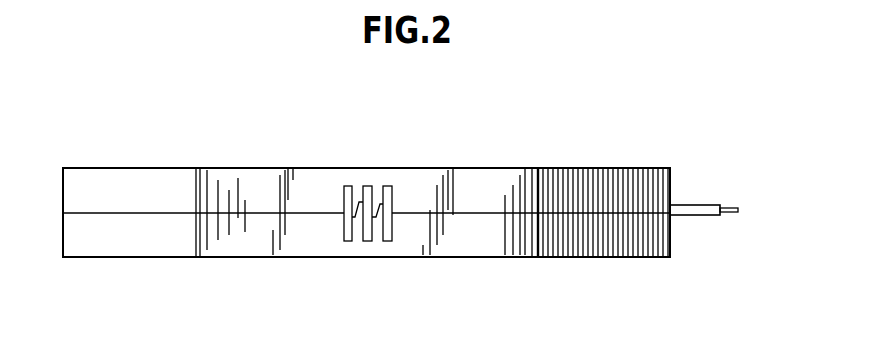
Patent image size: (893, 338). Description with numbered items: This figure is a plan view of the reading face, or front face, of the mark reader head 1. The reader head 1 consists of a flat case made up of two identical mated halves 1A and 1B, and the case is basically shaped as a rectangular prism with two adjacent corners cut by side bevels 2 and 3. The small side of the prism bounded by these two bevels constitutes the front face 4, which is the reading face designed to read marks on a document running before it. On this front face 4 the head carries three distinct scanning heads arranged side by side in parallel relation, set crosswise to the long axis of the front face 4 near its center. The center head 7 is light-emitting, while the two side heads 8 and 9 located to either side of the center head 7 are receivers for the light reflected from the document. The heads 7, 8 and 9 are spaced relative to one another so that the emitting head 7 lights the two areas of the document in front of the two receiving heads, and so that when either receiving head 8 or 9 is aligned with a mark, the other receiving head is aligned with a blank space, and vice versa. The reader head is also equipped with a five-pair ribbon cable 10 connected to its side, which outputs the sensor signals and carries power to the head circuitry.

The reader head 1 is at (158, 165).
The first case half 1A is at (253, 227).
The second case half 1B is at (274, 188).
The side bevel 2 is at (152, 218).
The side bevel 3 is at (622, 217).
The front face 4 is at (493, 218).
The center scanning head 7 is at (364, 200).
The side receiving head 8 is at (345, 197).
The side receiving head 9 is at (388, 197).
The ribbon cable 10 is at (695, 207).